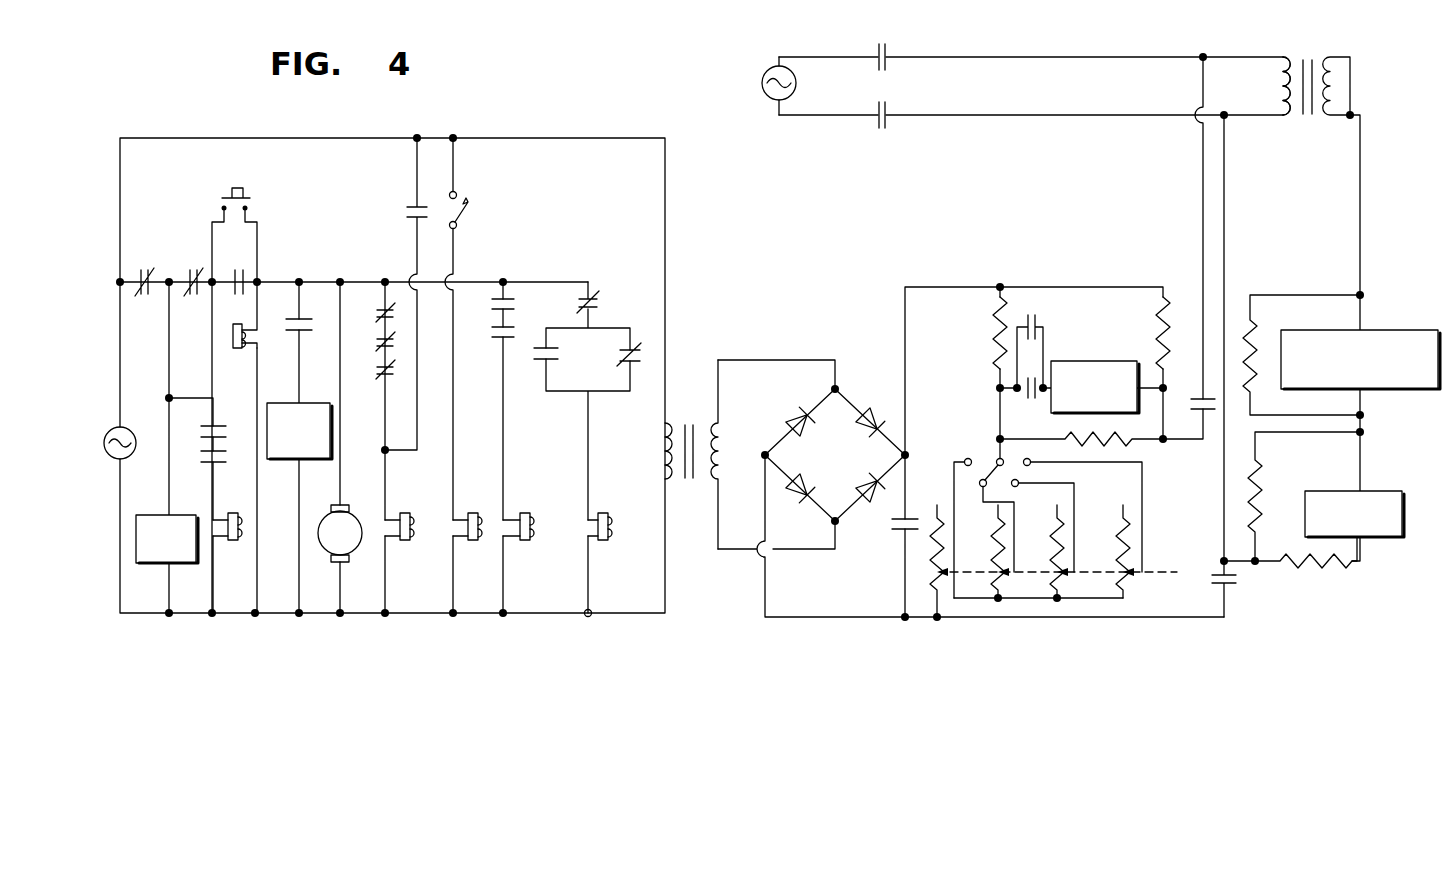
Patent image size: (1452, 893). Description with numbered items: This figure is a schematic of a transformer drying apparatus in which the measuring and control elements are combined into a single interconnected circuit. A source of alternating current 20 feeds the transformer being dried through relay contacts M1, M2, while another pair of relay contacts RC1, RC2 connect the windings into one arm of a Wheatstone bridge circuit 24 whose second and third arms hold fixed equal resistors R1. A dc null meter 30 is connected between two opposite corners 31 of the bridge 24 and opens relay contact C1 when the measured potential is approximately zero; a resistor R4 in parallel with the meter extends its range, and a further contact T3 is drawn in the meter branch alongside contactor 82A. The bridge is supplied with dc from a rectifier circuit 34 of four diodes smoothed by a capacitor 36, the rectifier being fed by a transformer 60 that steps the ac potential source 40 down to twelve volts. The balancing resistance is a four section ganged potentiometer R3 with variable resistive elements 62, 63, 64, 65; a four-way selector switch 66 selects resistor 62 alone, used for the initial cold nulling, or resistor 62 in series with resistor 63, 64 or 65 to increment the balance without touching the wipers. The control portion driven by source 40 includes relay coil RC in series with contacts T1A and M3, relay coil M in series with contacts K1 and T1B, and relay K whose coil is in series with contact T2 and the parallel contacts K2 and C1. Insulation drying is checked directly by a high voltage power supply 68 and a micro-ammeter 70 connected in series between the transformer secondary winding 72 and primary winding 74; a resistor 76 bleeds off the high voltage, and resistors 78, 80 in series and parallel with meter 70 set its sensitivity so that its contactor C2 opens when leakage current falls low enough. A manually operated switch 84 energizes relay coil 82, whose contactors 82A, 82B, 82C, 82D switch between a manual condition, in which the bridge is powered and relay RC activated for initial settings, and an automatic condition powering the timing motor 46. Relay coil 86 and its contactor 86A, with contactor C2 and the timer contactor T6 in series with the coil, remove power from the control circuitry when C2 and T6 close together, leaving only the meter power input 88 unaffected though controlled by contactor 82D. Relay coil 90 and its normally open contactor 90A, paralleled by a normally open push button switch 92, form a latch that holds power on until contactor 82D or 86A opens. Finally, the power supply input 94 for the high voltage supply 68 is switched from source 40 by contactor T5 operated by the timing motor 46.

The source of alternating current 20 is at (797, 86).
The Wheatstone bridge circuit 24 is at (1058, 274).
The dc null meter 30 is at (1086, 360).
The opposite corners of the bridge 31 is at (996, 398).
The rectifier circuit 34 is at (846, 459).
The capacitor 36 is at (902, 536).
The ac potential source 40 is at (128, 426).
The timing motor 46 is at (350, 542).
The transformer 60 is at (683, 408).
The variable resistive element 62 is at (932, 572).
The variable resistive element 63 is at (995, 532).
The variable resistive element 64 is at (1054, 532).
The variable resistive element 65 is at (1120, 532).
The four-way selector switch 66 is at (980, 450).
The high voltage power supply 68 is at (1307, 330).
The micro-ammeter 70 is at (1380, 490).
The transformer secondary winding 72 is at (1332, 54).
The primary winding 74 is at (1280, 88).
The resistor 76 is at (1253, 386).
The resistor 78 is at (1316, 572).
The resistor 80 is at (1262, 496).
The relay coil 82 is at (476, 512).
The contactor 82A is at (1036, 318).
The contactor 82B is at (411, 214).
The contactor 82C is at (378, 372).
The contactor 82D is at (150, 262).
The manually operated switch 84 is at (466, 216).
The relay coil 86 is at (242, 541).
The contactor 86A is at (199, 262).
The power input to meter 88 is at (150, 514).
The relay coil 90 is at (233, 337).
The normally open contactor 90A is at (245, 250).
The normally open push button switch 92 is at (244, 196).
The power supply input 94 is at (290, 402).
The relay contact M1 is at (886, 56).
The relay contact M2 is at (888, 94).
The relay contact M3 is at (379, 337).
The relay contact T1A is at (380, 308).
The relay contact T1B is at (496, 308).
The relay contact T2 is at (598, 312).
The timer contact T3 is at (1036, 380).
The contactor T5 is at (302, 330).
The contactor T6 is at (217, 424).
The relay contact K1 is at (496, 336).
The relay contact K2 is at (540, 358).
The relay contact C1 is at (634, 357).
The contactor C2 is at (218, 464).
The relay coil RC is at (404, 541).
The relay coil M is at (528, 541).
The relay K is at (612, 540).
The fixed equal resistors R1 is at (996, 336).
The four section ganged potentiometer R3 is at (1060, 632).
The resistor R4 is at (1078, 436).
The relay contact RC1 is at (1200, 410).
The relay contact RC2 is at (1233, 574).